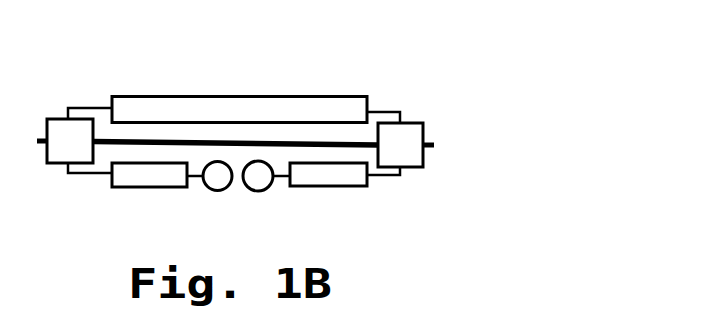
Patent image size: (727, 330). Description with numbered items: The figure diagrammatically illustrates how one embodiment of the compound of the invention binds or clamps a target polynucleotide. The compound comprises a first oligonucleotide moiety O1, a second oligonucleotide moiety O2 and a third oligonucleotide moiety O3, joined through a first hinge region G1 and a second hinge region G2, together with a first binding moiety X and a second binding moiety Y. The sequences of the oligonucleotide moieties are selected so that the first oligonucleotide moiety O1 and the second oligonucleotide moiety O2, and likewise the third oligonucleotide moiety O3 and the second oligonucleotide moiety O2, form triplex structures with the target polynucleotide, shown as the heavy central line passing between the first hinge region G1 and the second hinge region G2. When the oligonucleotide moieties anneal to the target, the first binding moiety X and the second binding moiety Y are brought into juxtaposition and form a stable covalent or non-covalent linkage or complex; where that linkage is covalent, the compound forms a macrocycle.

The first hinge region G1 is at (65, 141).
The second hinge region G2 is at (406, 145).
The first oligonucleotide moiety O1 is at (157, 188).
The second oligonucleotide moiety O2 is at (241, 97).
The third oligonucleotide moiety O3 is at (310, 188).
The first binding moiety X is at (217, 176).
The second binding moiety Y is at (258, 176).